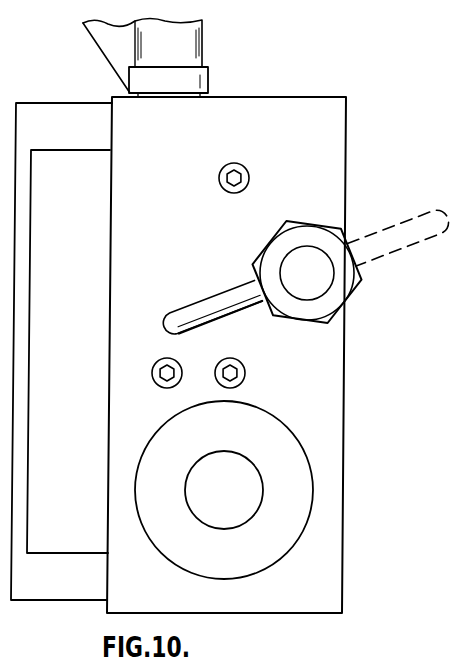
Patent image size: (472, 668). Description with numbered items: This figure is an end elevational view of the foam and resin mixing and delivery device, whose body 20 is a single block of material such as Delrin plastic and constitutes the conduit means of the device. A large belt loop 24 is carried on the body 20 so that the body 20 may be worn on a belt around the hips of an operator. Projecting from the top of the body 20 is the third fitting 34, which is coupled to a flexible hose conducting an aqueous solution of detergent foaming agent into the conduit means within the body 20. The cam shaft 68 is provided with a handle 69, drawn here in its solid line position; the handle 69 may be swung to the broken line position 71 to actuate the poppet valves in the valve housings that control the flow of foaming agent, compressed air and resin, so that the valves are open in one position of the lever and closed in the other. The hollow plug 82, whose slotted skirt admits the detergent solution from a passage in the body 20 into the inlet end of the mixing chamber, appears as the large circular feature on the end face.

The body 20 is at (344, 402).
The belt loop 24 is at (13, 530).
The third fitting 34 is at (206, 72).
The cam shaft 68 is at (300, 258).
The handle 69 is at (205, 307).
The broken line position 71 is at (393, 225).
The hollow plug 82 is at (297, 497).